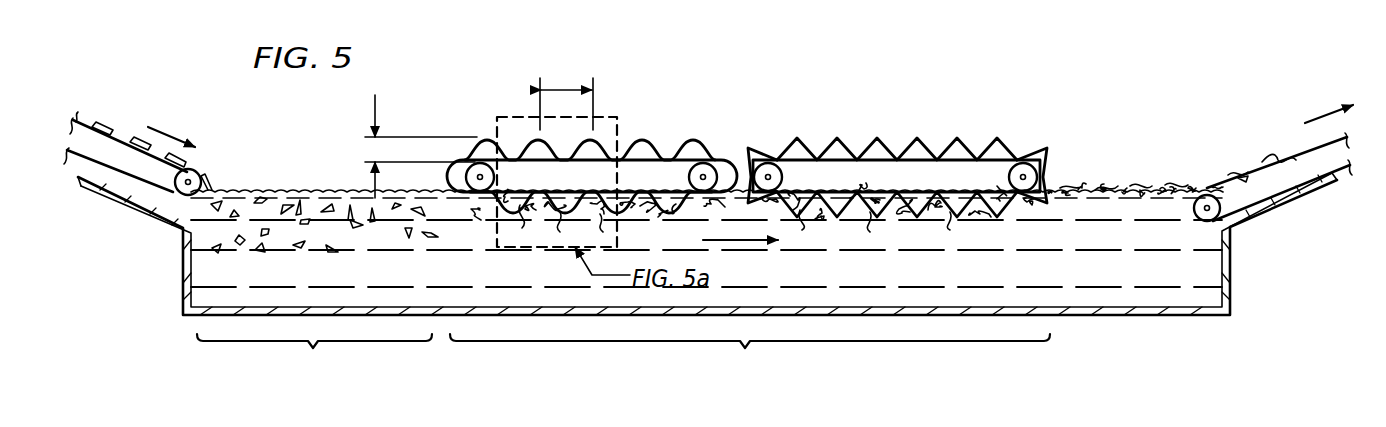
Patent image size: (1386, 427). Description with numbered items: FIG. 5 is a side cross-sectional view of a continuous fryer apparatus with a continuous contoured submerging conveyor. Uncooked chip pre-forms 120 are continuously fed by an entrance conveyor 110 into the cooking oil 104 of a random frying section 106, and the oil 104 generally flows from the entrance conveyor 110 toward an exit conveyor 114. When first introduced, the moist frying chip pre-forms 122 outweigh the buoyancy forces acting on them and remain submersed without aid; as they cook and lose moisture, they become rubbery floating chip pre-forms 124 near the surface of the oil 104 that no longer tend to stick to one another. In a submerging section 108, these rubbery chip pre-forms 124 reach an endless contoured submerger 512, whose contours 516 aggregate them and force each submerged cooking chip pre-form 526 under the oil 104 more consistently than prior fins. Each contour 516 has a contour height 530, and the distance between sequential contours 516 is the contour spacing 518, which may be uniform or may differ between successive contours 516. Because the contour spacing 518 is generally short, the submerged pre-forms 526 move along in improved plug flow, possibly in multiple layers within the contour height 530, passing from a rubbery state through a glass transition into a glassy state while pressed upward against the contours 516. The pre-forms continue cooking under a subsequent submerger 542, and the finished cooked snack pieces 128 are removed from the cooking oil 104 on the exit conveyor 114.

The frying or cooking oil 104 is at (1207, 273).
The random frying section of continuous fryer 106 is at (314, 357).
The submerging section of continuous fryer 108 is at (750, 358).
The entrance conveyor 110 is at (122, 140).
The exit conveyor 114 is at (1347, 170).
The uncooked chip pre-form 120 is at (103, 118).
The frying chip pre-form 122 is at (303, 192).
The rubbery floating chip pre-form 124 is at (397, 207).
The cooked snack pieces 128 is at (1273, 157).
The contoured submerger 512 is at (611, 145).
The contours of contoured submerger 516 is at (727, 150).
The contour spacing 518 is at (568, 88).
The cooking chip pre-form 526 is at (532, 220).
The contour height 530 is at (367, 148).
The subsequent submerger 542 is at (925, 140).